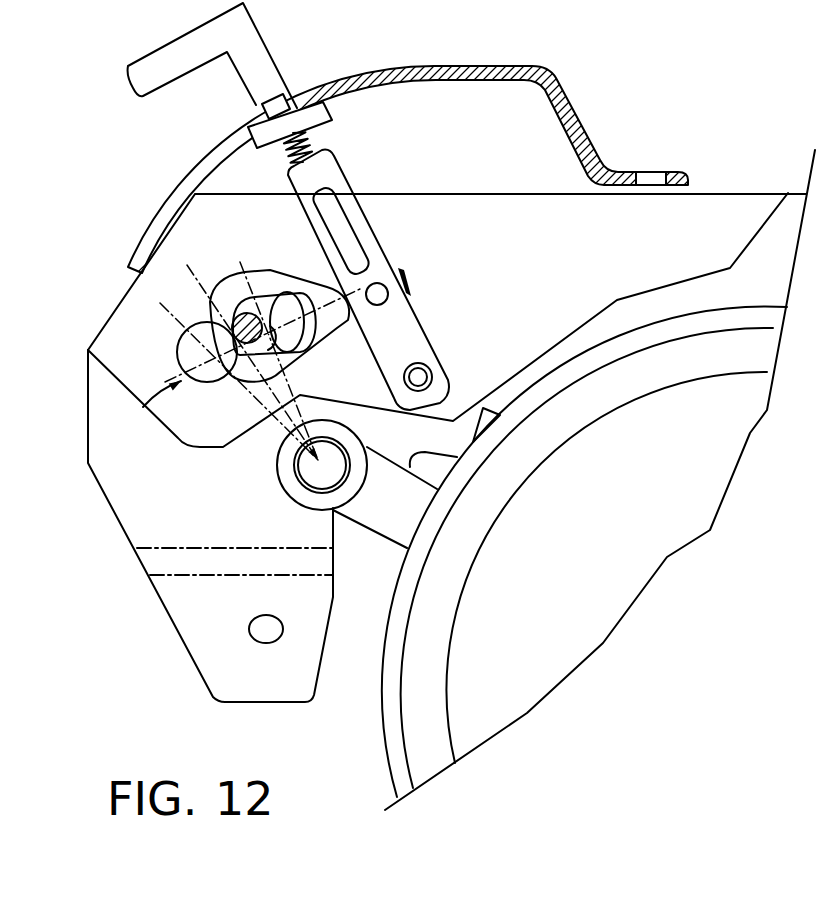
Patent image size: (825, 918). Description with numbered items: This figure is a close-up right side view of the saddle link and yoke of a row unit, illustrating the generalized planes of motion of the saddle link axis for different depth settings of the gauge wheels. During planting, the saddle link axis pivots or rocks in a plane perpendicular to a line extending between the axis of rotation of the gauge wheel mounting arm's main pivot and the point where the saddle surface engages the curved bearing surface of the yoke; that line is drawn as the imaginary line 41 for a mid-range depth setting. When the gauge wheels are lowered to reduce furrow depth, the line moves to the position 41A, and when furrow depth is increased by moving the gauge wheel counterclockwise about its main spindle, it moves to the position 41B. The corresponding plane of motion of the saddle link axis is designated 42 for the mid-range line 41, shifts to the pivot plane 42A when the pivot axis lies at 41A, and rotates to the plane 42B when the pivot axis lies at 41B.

The imaginary line 41 is at (200, 292).
The position of imaginary line 41A is at (236, 263).
The position of imaginary line 41B is at (88, 350).
The plane of motion 42 is at (88, 463).
The pivot plane 42A is at (327, 290).
The plane of motion 42B is at (168, 408).